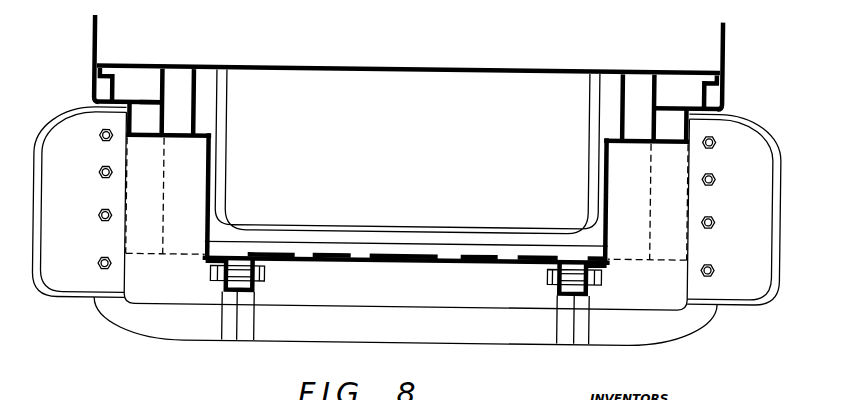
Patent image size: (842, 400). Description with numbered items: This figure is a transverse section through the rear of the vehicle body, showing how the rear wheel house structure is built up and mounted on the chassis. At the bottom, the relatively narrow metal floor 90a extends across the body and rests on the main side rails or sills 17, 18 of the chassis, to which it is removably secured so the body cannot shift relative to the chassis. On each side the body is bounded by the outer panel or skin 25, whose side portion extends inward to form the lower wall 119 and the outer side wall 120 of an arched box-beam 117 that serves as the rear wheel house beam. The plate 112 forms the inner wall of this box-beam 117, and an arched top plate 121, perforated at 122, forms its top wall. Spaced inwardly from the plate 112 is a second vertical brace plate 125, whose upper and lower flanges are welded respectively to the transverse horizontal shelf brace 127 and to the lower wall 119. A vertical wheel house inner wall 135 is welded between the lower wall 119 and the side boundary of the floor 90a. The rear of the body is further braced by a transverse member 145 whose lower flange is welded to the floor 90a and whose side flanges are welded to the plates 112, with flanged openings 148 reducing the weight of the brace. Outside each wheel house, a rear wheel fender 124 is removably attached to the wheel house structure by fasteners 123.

The transverse horizontal shelf brace 127 is at (563, 42).
The outer panel or skin 25 is at (92, 35).
The arched top plate 121 is at (110, 92).
The perforation 122 is at (152, 98).
The outer side wall 120 is at (143, 100).
The plate 112 is at (166, 100).
The second vertical brace plate 125 is at (197, 107).
The vertical wheel house inner wall 135 is at (210, 186).
The transverse member 145 is at (410, 237).
The flanged openings 148 is at (381, 247).
The floor 90a is at (480, 255).
The main side rail or sill 17 is at (223, 286).
The main side rail or sill 18 is at (558, 283).
The lower wall 119 is at (153, 140).
The rear wheel fender 124 is at (72, 114).
The fasteners 123 is at (100, 170).
The box-beam 117 is at (714, 139).